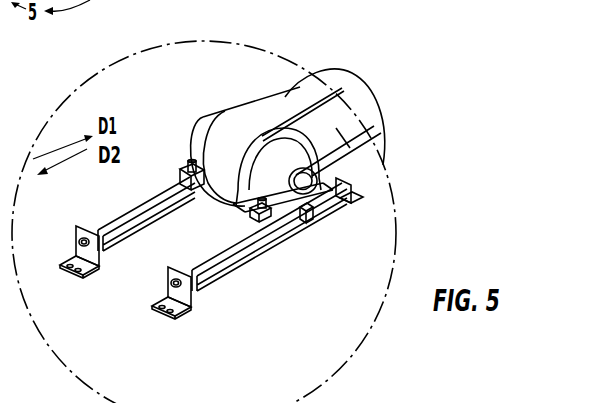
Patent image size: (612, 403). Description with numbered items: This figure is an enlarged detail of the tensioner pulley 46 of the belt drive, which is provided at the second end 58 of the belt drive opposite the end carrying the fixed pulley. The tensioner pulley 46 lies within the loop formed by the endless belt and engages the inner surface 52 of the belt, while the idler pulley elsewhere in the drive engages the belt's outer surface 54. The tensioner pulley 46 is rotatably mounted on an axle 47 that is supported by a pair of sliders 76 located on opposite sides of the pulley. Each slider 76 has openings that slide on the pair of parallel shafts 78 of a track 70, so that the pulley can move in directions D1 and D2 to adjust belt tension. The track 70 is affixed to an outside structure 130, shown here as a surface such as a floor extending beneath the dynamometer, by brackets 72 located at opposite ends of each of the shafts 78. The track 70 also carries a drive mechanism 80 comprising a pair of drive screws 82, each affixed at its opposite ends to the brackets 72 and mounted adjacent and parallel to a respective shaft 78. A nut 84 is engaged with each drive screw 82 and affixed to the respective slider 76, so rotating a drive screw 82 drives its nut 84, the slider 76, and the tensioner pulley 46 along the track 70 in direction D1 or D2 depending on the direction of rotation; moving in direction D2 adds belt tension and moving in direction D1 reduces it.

The tensioner pulley 46 is at (250, 140).
The axle 47 is at (300, 87).
The inner surface 52 is at (314, 104).
The outer surface 54 is at (267, 100).
The second end 58 is at (183, 151).
The track 70 is at (229, 274).
The brackets 72 is at (153, 291).
The sliders 76 is at (191, 162).
The parallel shafts 78 is at (160, 222).
The drive mechanism 80 is at (313, 234).
The drive screws 82 is at (137, 205).
The nut 84 is at (313, 220).
The outside structure 130 is at (187, 362).